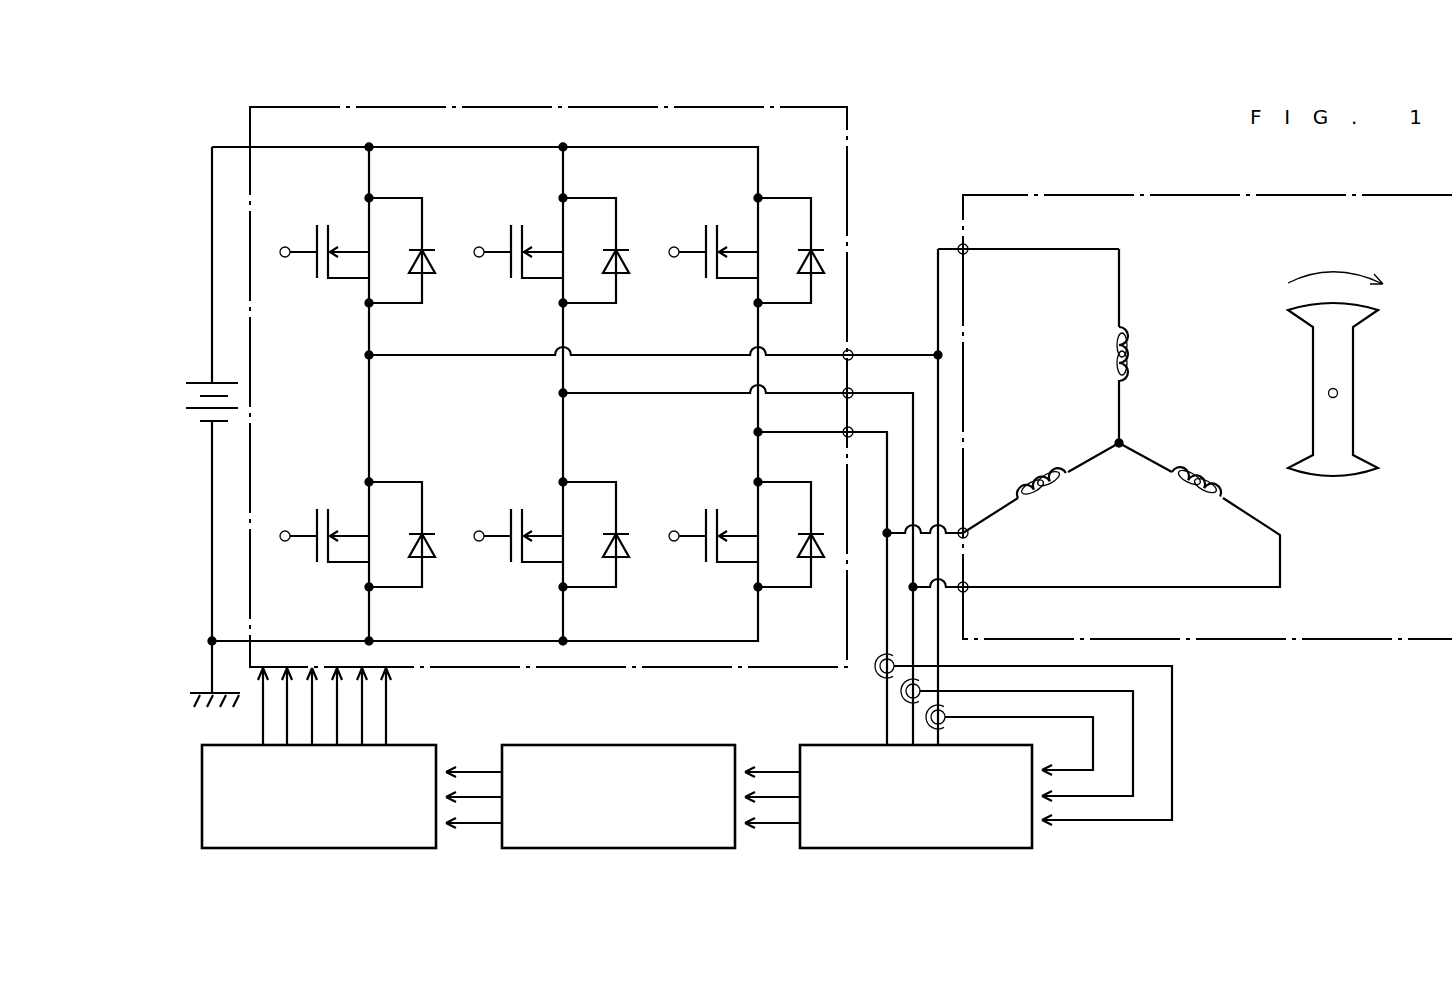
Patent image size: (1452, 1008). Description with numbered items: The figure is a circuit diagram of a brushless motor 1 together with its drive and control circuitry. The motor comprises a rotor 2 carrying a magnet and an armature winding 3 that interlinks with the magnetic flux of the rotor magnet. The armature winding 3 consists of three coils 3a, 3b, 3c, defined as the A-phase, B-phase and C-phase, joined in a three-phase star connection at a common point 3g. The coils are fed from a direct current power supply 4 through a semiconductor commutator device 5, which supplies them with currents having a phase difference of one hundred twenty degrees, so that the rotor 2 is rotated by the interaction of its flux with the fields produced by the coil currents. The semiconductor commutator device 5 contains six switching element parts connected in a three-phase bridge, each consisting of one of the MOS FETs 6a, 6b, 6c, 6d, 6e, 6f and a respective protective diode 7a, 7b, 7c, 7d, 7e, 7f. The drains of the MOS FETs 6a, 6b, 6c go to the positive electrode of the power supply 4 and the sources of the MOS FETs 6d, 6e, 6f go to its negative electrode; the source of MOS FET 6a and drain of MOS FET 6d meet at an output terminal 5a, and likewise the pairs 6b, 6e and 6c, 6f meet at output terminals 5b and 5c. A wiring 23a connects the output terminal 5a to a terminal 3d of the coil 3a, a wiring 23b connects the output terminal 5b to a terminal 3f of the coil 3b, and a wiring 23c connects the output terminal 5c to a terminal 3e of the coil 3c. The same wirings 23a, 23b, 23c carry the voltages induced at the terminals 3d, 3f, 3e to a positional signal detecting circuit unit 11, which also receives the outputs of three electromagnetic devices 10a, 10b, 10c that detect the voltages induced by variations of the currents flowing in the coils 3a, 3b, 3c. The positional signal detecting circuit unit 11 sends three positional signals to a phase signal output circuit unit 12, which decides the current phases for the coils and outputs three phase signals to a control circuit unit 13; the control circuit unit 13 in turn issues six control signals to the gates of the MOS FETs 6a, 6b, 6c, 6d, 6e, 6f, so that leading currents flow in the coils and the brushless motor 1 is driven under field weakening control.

The brushless motor 1 is at (1047, 195).
The rotor 2 is at (1356, 370).
The armature winding 3 is at (1169, 395).
The coil 3a is at (1103, 346).
The coil 3b is at (1202, 473).
The coil 3c is at (1048, 492).
The terminal 3d is at (968, 246).
The terminal 3e is at (969, 537).
The terminal 3f is at (969, 591).
The neutral point 3g is at (1125, 441).
The direct current power supply 4 is at (199, 427).
The semiconductor commutator device 5 is at (848, 152).
The output terminal 5a is at (854, 352).
The output terminal 5b is at (854, 390).
The output terminal 5c is at (854, 429).
The MOS FET 6a is at (324, 240).
The MOS FET 6b is at (518, 240).
The MOS FET 6c is at (713, 240).
The MOS FET 6d is at (324, 524).
The MOS FET 6e is at (518, 524).
The MOS FET 6f is at (713, 524).
The protective diode 7a is at (423, 249).
The protective diode 7b is at (616, 249).
The protective diode 7c is at (807, 249).
The protective diode 7d is at (427, 566).
The protective diode 7e is at (621, 566).
The protective diode 7f is at (816, 566).
The electromagnetic device 10a is at (950, 720).
The electromagnetic device 10b is at (905, 704).
The electromagnetic device 10c is at (880, 676).
The positional signal detecting circuit unit 11 is at (890, 849).
The phase signal output circuit unit 12 is at (580, 849).
The control circuit unit 13 is at (290, 849).
The wiring 23a is at (941, 616).
The wiring 23b is at (918, 612).
The wiring 23c is at (880, 568).